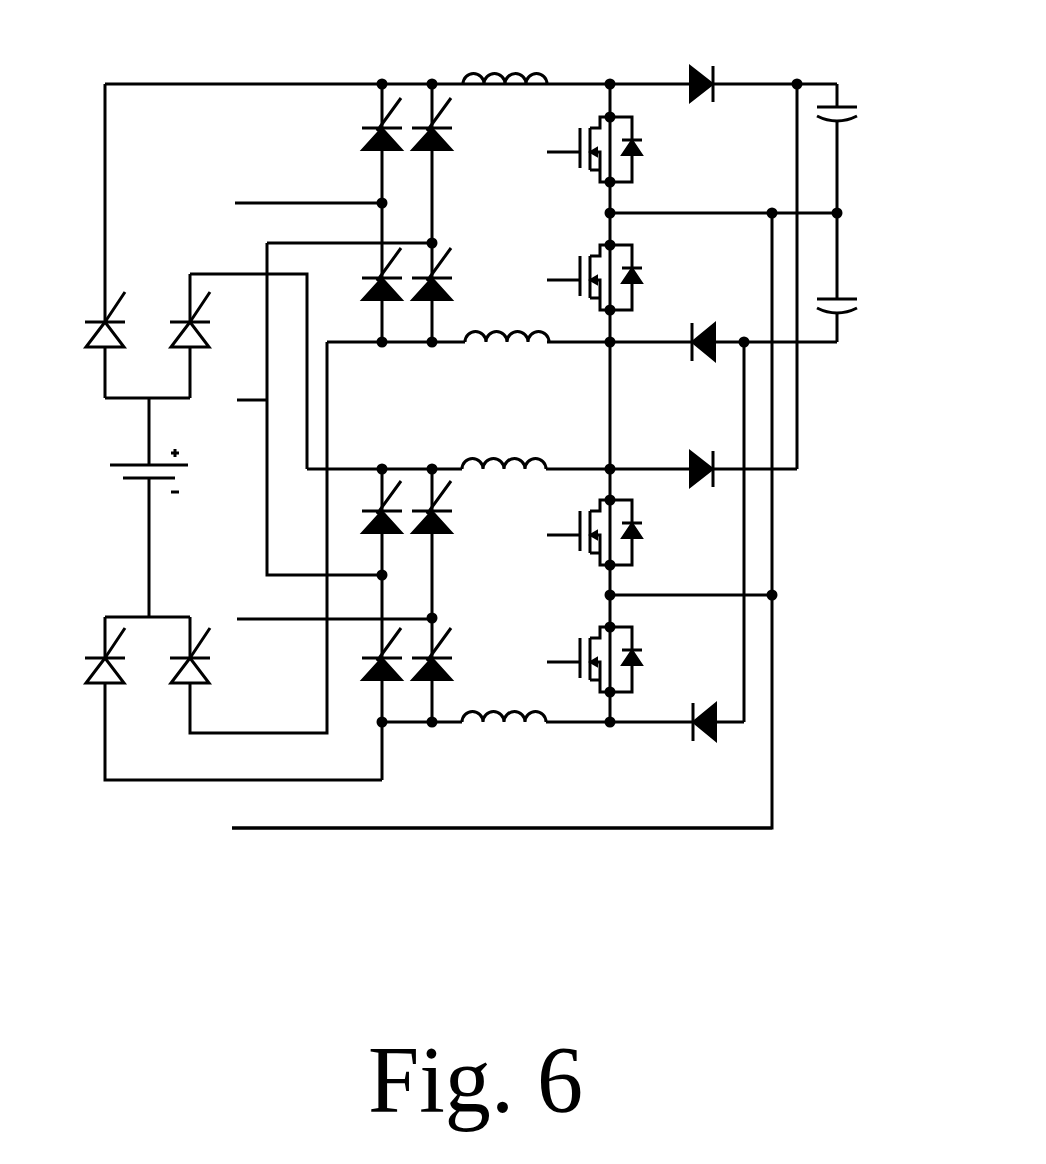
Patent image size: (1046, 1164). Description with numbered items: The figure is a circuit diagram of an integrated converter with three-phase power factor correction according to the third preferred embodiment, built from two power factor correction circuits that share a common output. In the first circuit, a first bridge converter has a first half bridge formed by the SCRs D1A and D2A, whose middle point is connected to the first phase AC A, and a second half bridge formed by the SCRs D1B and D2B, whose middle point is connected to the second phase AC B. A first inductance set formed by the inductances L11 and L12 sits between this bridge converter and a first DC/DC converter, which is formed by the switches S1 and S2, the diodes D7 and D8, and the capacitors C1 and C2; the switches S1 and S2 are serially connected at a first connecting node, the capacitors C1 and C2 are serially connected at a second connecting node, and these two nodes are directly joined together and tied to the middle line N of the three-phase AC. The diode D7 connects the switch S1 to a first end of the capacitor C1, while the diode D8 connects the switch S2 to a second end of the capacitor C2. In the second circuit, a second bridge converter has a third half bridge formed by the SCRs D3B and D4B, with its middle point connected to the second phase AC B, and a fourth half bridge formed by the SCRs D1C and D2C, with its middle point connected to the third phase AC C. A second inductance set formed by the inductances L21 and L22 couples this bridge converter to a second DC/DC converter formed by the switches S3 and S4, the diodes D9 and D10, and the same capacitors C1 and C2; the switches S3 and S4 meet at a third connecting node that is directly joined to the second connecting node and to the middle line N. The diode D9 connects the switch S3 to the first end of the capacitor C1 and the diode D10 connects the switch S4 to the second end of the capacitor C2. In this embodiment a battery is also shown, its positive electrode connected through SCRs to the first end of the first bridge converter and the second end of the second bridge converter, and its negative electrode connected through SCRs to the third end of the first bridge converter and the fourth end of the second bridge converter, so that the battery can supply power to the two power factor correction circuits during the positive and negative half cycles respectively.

The SCR D1A is at (352, 136).
The SCR D1B is at (471, 136).
The SCR D2A is at (353, 284).
The SCR D2B is at (468, 284).
The SCR D3B is at (349, 511).
The SCR D1C is at (465, 522).
The SCR D4B is at (349, 657).
The SCR D2C is at (466, 658).
The diode D7 is at (709, 57).
The diode D8 is at (707, 313).
The diode D9 is at (709, 446).
The diode D10 is at (714, 697).
The inductance L11 is at (505, 61).
The inductance L12 is at (507, 359).
The inductance L21 is at (504, 484).
The inductance L22 is at (504, 738).
The switch S1 is at (613, 150).
The switch S2 is at (614, 278).
The switch S3 is at (615, 533).
The switch S4 is at (615, 660).
The capacitor C1 is at (862, 125).
The capacitor C2 is at (862, 301).
The first phase AC A is at (300, 184).
The second phase AC B is at (238, 374).
The third phase AC C is at (326, 595).
The middle line N is at (499, 807).